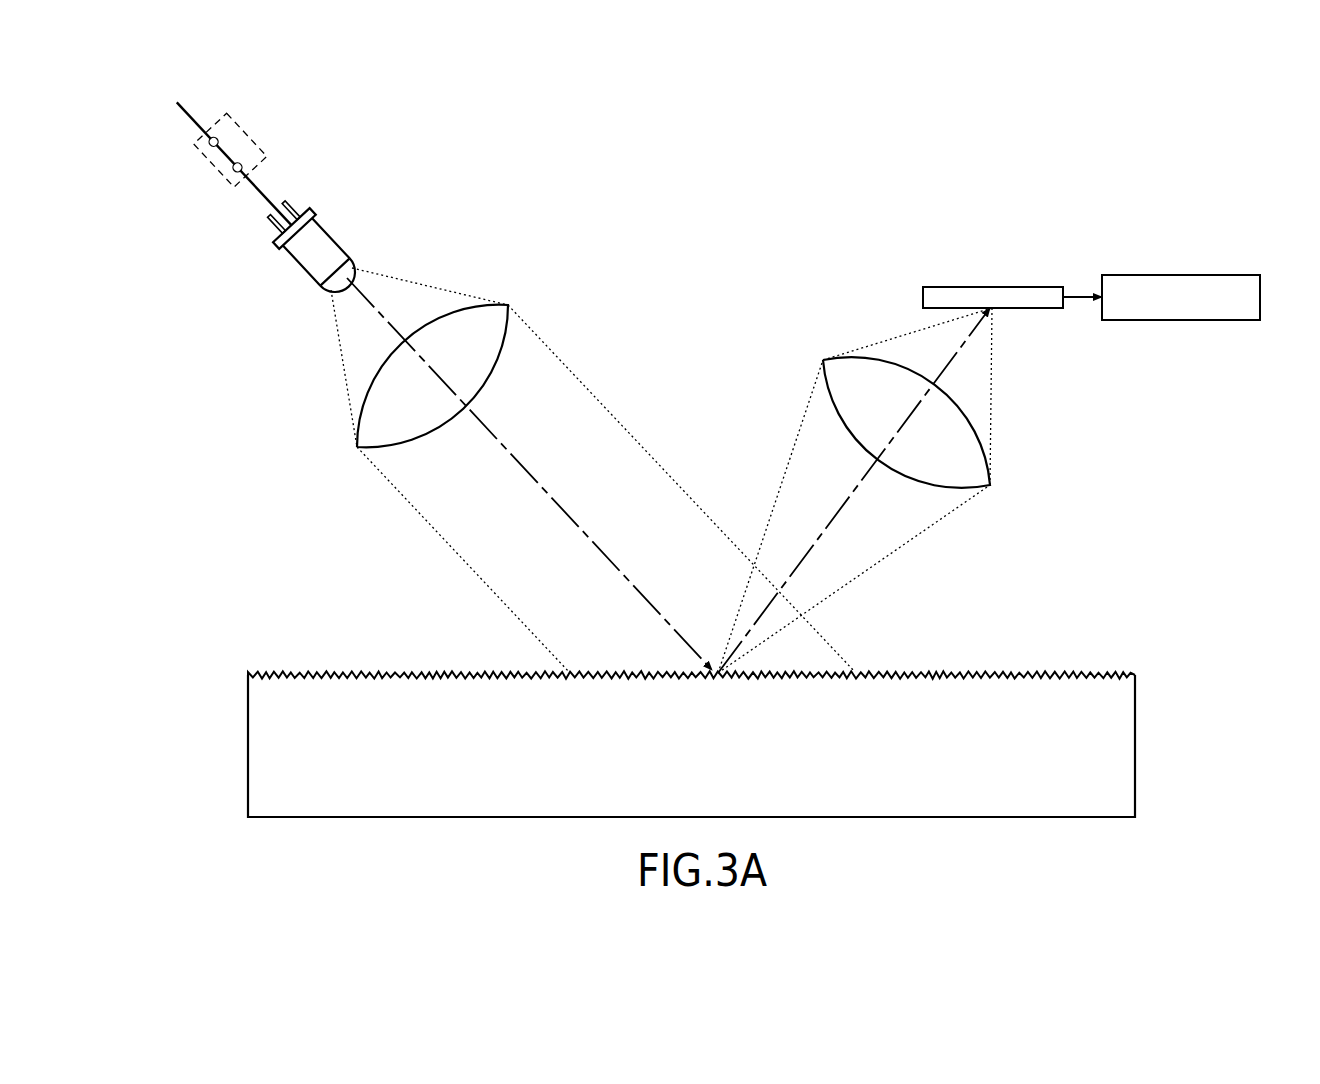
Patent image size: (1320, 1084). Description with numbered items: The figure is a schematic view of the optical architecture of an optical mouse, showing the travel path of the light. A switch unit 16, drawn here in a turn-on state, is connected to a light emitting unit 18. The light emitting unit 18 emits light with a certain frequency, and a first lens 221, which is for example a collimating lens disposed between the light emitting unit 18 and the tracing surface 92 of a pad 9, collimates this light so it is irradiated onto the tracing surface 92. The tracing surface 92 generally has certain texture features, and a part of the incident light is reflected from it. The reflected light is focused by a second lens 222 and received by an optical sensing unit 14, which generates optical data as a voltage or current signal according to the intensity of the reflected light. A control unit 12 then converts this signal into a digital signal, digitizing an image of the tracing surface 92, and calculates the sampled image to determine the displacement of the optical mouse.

The pad 9 is at (1120, 738).
The tracing surface 92 is at (1057, 672).
The control unit 12 is at (1175, 275).
The optical sensing unit 14 is at (992, 287).
The switch unit 16 is at (212, 168).
The light emitting unit 18 is at (328, 245).
The first lens 221 is at (478, 318).
The second lens 222 is at (963, 448).